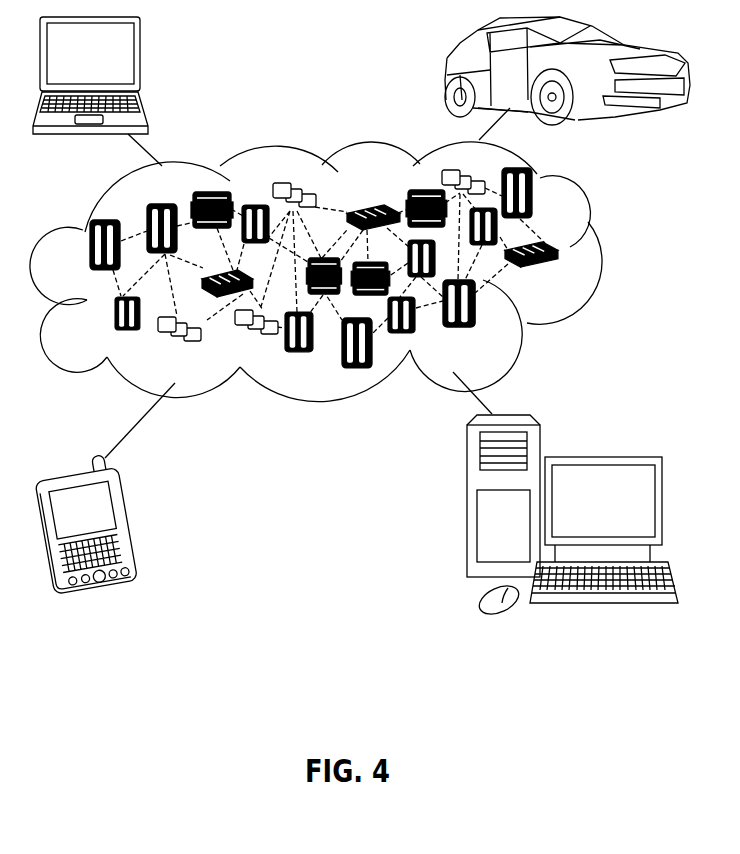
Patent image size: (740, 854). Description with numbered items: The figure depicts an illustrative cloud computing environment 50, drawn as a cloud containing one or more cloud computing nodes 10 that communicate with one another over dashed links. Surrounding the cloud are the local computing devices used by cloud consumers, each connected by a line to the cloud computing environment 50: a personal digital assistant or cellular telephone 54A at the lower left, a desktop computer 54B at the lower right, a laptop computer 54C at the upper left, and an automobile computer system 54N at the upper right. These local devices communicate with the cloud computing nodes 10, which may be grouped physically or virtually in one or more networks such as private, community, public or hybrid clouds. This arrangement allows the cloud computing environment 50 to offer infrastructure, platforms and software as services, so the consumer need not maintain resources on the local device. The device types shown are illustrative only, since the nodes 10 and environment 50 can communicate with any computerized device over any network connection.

The laptop computer 54C is at (141, 60).
The automobile computer system 54N is at (445, 72).
The cloud computing environment 50 is at (601, 252).
The cloud computing nodes 10 is at (567, 281).
The personal digital assistant or cellular telephone 54A is at (134, 524).
The desktop computer 54B is at (608, 445).